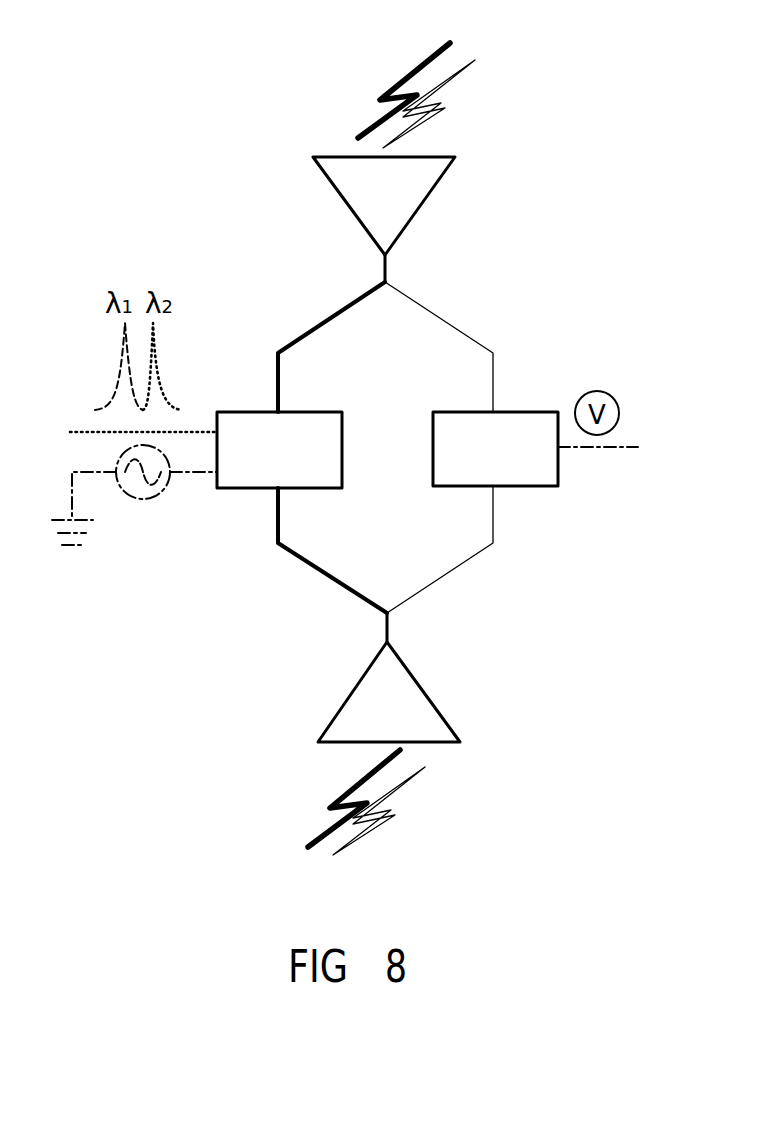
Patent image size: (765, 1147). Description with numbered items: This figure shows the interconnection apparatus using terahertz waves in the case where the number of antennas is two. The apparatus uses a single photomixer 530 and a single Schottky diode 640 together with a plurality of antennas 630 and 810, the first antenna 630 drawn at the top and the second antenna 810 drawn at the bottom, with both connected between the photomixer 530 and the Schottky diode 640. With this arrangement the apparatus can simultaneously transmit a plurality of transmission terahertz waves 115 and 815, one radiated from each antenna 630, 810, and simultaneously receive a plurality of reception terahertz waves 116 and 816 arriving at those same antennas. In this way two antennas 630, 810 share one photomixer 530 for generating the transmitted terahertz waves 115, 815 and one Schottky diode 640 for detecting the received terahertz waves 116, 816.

The transmission terahertz wave 115 is at (361, 85).
The reception terahertz wave 116 is at (484, 88).
The antenna 630 is at (310, 196).
The photomixer 530 is at (232, 488).
The Schottky diode 640 is at (545, 486).
The antenna 810 is at (453, 682).
The transmission terahertz wave 815 is at (308, 786).
The reception terahertz wave 816 is at (452, 786).